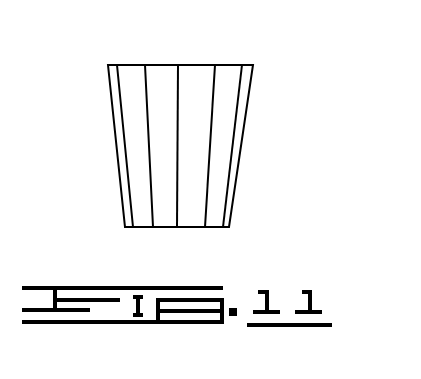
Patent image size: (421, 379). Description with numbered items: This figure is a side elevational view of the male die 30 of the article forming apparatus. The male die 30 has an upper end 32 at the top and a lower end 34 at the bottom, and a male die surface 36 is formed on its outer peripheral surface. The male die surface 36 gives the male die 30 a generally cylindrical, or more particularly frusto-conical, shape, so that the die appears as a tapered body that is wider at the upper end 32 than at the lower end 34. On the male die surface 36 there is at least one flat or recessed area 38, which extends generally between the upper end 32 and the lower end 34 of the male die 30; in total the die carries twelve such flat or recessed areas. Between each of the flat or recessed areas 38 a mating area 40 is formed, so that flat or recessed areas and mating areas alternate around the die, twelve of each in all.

The male die 30 is at (250, 110).
The upper end 32 is at (233, 65).
The lower end 34 is at (187, 227).
The male die surface 36 is at (242, 168).
The flat or recessed area 38 is at (165, 77).
The mating area 40 is at (145, 83).